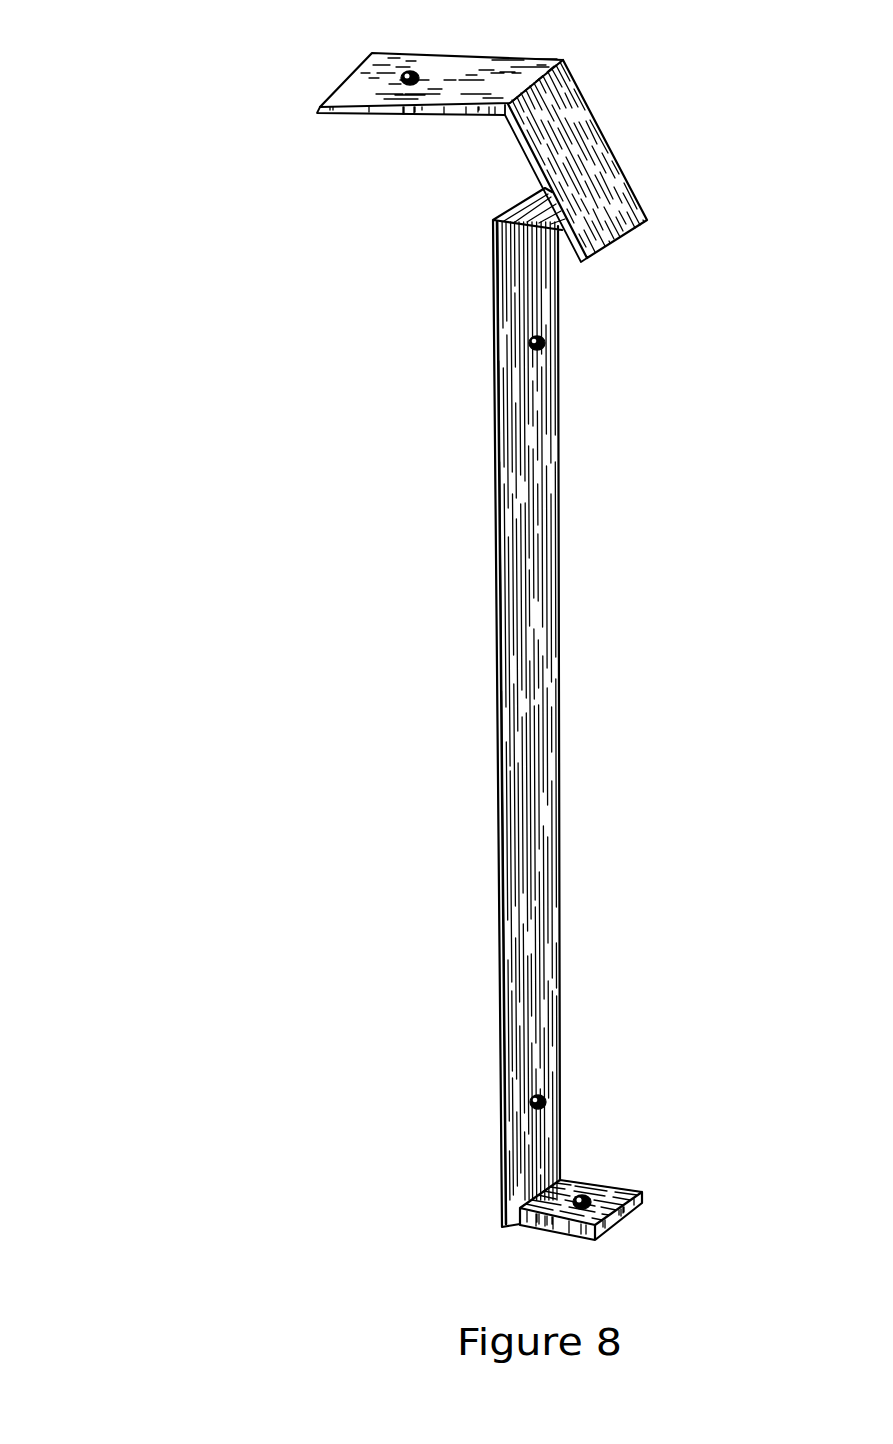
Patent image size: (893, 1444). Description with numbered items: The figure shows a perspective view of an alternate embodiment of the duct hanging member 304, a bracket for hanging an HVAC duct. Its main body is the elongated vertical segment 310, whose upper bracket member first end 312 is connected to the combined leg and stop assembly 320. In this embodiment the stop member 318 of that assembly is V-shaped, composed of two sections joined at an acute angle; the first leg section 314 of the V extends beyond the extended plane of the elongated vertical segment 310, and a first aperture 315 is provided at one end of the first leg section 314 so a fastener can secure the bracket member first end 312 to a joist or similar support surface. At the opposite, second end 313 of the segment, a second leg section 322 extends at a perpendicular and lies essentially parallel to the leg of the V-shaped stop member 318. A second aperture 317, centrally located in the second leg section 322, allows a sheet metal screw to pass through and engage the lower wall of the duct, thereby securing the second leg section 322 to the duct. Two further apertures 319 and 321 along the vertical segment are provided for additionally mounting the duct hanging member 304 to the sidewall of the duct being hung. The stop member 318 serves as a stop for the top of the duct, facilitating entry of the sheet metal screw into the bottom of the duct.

The duct hanging member 304 is at (247, 745).
The elongated vertical segment 310 is at (535, 710).
The bracket member first end 312 is at (538, 305).
The second end 313 is at (540, 1162).
The first leg section 314 is at (495, 70).
The first aperture 315 is at (407, 87).
The second aperture 317 is at (587, 1200).
The stop member 318 is at (617, 233).
The aperture 319 is at (542, 350).
The combined leg and stop assembly 320 is at (246, 191).
The aperture 321 is at (543, 1100).
The second leg section 322 is at (553, 1200).